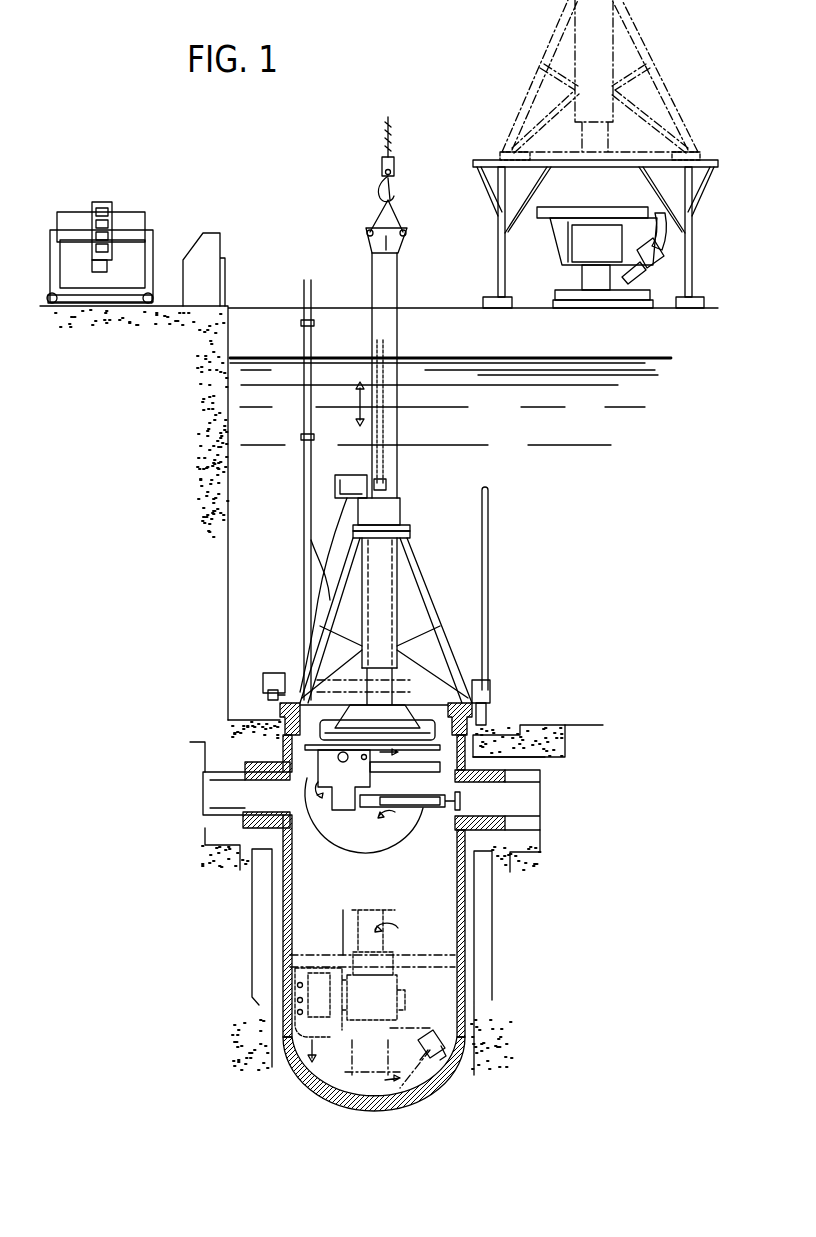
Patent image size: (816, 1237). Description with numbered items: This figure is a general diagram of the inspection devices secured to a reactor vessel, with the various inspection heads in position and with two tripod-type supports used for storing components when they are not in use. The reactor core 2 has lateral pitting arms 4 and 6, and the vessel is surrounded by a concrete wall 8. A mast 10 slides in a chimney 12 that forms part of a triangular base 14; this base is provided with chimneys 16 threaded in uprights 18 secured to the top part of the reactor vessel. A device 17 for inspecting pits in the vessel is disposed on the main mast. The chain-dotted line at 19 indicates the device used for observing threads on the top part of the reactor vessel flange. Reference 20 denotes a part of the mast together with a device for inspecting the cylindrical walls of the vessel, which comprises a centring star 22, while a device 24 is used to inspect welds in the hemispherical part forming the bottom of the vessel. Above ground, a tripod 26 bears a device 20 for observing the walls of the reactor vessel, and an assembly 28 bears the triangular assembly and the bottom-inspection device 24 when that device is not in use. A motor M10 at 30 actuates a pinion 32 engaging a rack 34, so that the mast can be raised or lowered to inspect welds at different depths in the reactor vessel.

The reactor core 2 is at (466, 905).
The lateral pitting arm 4 is at (500, 836).
The lateral pitting arm 6 is at (224, 818).
The concrete wall 8 is at (563, 735).
The mast 10 is at (400, 429).
The chimney 12 is at (406, 516).
The triangular base 14 is at (428, 570).
The chimney 16 is at (492, 692).
The device for inspecting pits 17 is at (345, 824).
The upright 18 is at (490, 553).
The device for observing threads 19 is at (262, 669).
The device for inspecting cylindrical walls 20 is at (158, 206).
The centring star 22 is at (412, 948).
The device for inspecting welds in the hemispherical bottom 24 is at (676, 258).
The tripod 26 is at (165, 249).
The assembly 28 is at (478, 161).
The motor location 30 is at (335, 487).
The pinion 32 is at (390, 486).
The rack 34 is at (385, 462).
The motor M10 is at (356, 475).